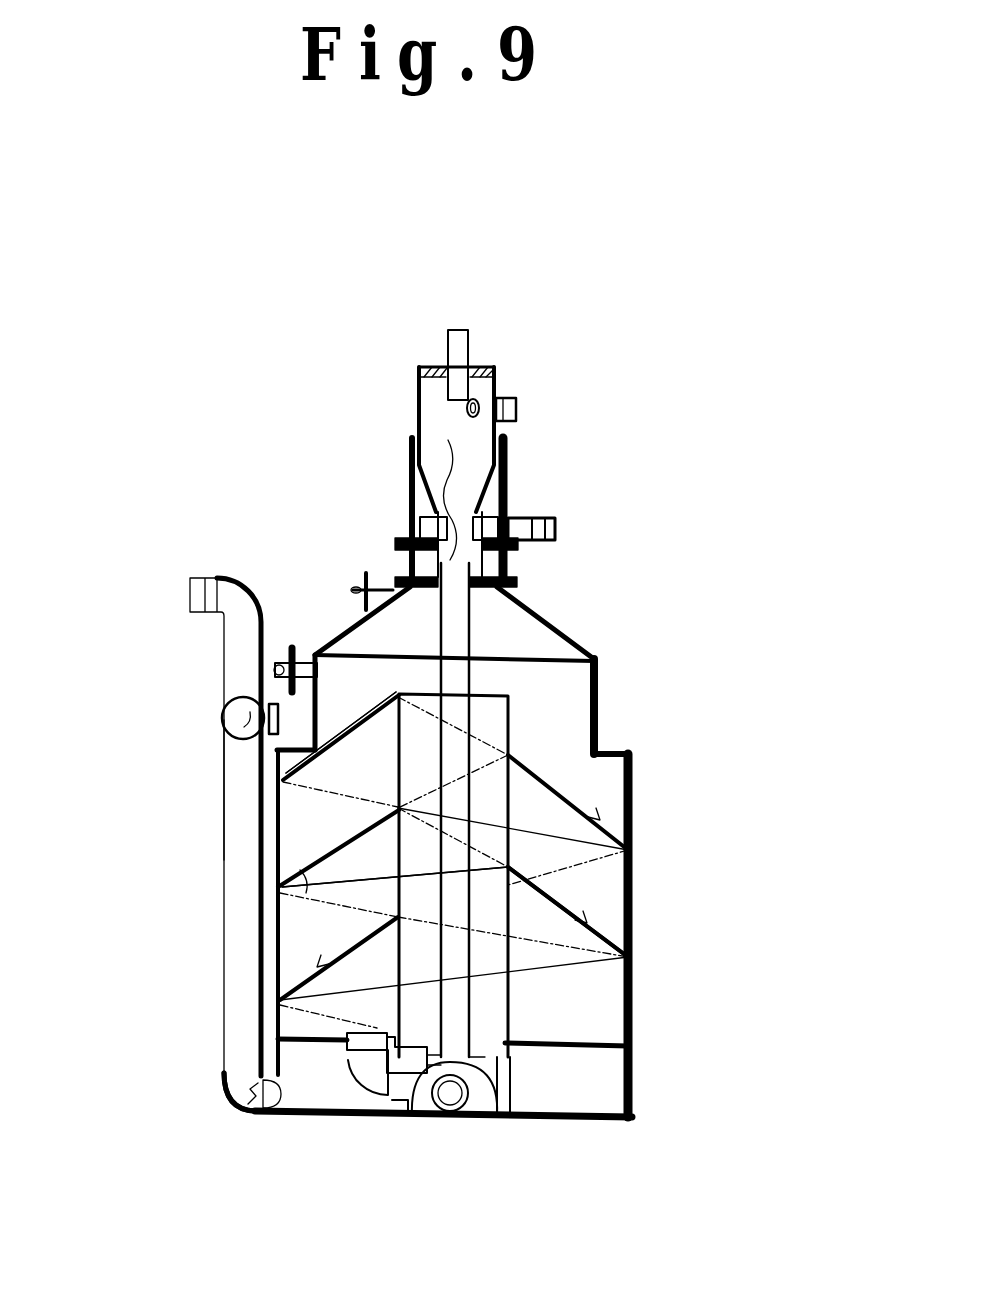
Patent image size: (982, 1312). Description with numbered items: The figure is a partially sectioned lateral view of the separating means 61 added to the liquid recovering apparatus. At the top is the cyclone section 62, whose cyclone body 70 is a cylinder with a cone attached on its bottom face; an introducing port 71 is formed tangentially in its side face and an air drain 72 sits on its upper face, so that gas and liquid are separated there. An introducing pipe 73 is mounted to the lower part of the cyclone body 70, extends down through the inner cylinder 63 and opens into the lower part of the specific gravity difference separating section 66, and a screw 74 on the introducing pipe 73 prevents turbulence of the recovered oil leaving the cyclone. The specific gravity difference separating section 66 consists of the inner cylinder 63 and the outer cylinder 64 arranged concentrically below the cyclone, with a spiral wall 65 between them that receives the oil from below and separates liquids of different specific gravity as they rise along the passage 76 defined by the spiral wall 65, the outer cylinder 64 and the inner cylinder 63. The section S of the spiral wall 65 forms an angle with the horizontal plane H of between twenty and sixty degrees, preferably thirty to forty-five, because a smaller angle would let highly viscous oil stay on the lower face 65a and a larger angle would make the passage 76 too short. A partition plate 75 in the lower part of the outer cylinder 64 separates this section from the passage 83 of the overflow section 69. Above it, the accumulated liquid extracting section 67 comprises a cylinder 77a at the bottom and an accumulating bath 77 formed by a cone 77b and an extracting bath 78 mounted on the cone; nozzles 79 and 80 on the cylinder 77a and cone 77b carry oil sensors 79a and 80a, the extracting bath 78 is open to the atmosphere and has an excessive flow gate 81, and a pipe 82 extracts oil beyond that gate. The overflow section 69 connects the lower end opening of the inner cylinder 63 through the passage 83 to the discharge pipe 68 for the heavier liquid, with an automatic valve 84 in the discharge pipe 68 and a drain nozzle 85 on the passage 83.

The separating means 61 is at (367, 248).
The cyclone section 62 is at (507, 460).
The inner cylinder 63 is at (633, 793).
The outer cylinder 64 is at (633, 923).
The spiral wall 65 is at (287, 980).
The lower face of the spiral wall 65a is at (287, 837).
The specific gravity difference separating section 66 is at (583, 1020).
The accumulated liquid extracting section 67 is at (772, 547).
The discharge pipe 68 is at (240, 778).
The overflow section 69 is at (225, 657).
The cyclone body 70 is at (503, 436).
The introducing port 71 is at (503, 397).
The air drain 72 is at (462, 335).
The introducing pipe 73 is at (492, 1118).
The screw 74 is at (419, 410).
The partition plate 75 is at (633, 1078).
The passage 76 is at (570, 1118).
The accumulating bath 77 is at (715, 630).
The cylinder 77a is at (600, 712).
The cone 77b is at (578, 645).
The extracting bath 78 is at (525, 562).
The nozzle 79 is at (291, 648).
The oil sensor 79a is at (290, 650).
The nozzle 80 is at (398, 538).
The oil sensor 80a is at (366, 575).
The excessive flow gate 81 is at (510, 493).
The pipe 82 is at (556, 525).
The passage 83 is at (327, 1095).
The automatic valve 84 is at (222, 718).
The drain nozzle 85 is at (430, 1118).
The section of the spiral wall S is at (287, 813).
The horizontal plane H is at (290, 937).